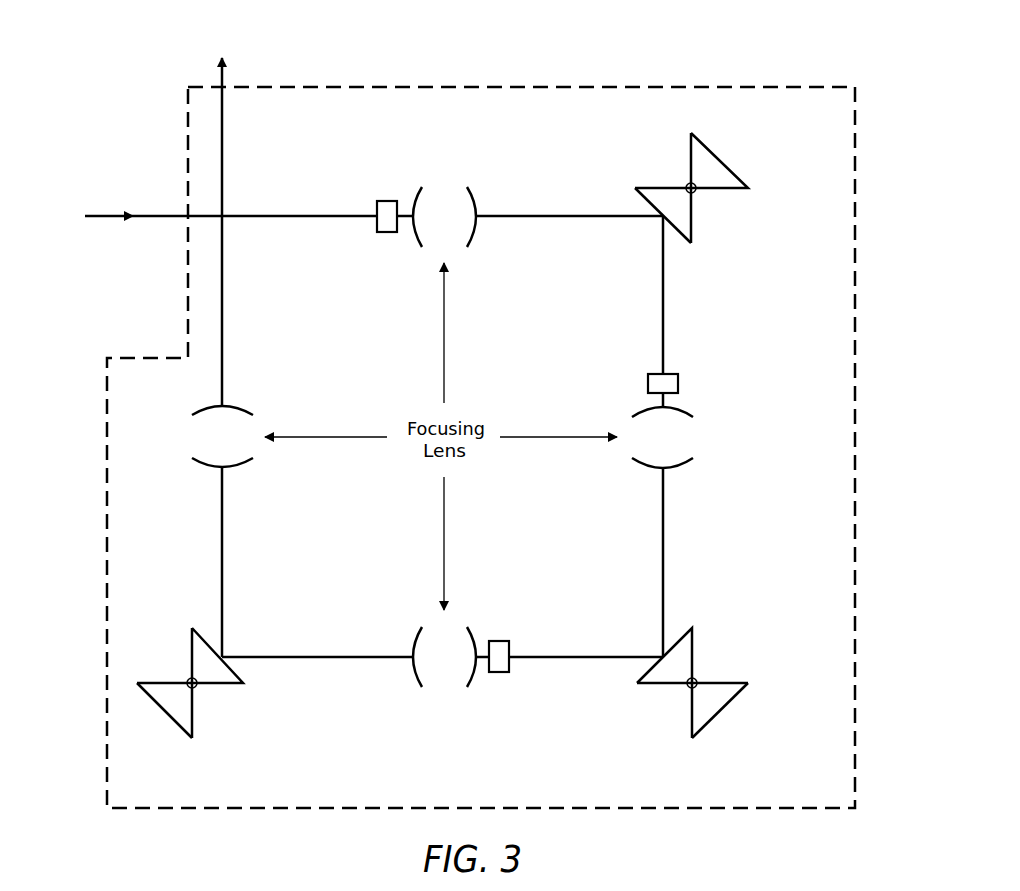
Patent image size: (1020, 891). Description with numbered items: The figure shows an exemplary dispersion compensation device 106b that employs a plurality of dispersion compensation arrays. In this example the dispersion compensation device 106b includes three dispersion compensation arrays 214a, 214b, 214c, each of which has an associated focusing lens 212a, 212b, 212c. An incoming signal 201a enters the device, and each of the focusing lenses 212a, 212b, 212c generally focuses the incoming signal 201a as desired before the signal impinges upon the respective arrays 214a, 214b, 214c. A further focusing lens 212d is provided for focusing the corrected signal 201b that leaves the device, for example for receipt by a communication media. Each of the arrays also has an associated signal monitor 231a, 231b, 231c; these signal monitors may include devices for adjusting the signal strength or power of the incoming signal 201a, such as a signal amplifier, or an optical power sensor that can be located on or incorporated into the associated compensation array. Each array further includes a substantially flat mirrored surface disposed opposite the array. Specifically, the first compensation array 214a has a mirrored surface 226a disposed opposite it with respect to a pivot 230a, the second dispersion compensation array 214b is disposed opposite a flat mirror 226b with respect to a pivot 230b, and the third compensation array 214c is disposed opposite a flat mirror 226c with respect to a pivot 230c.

The dispersion compensation device 106b is at (772, 87).
The incoming signal 201a is at (103, 213).
The corrected signal 201b is at (223, 78).
The focusing lens 212a is at (413, 197).
The focusing lens 212b is at (643, 408).
The focusing lens 212c is at (413, 637).
The focusing lens 212d is at (237, 408).
The first compensation array 214a is at (655, 184).
The second dispersion compensation array 214b is at (678, 636).
The third compensation array 214c is at (282, 690).
The mirrored surface 226a is at (719, 154).
The flat mirror 226b is at (720, 716).
The flat mirror 226c is at (177, 727).
The pivot 230a is at (696, 193).
The pivot 230b is at (700, 680).
The pivot 230c is at (185, 680).
The signal monitor 231a is at (387, 232).
The signal monitor 231b is at (678, 383).
The signal monitor 231c is at (498, 673).